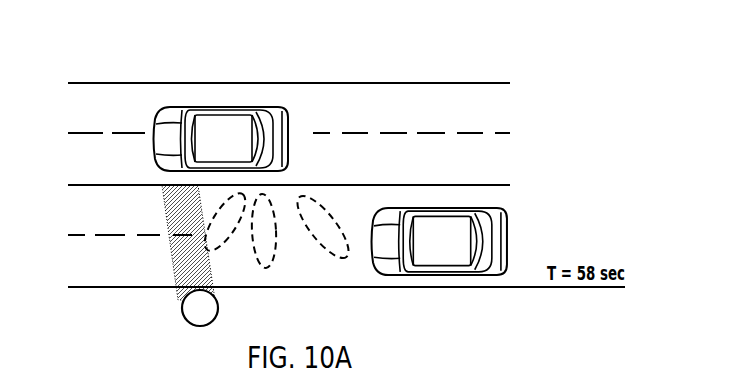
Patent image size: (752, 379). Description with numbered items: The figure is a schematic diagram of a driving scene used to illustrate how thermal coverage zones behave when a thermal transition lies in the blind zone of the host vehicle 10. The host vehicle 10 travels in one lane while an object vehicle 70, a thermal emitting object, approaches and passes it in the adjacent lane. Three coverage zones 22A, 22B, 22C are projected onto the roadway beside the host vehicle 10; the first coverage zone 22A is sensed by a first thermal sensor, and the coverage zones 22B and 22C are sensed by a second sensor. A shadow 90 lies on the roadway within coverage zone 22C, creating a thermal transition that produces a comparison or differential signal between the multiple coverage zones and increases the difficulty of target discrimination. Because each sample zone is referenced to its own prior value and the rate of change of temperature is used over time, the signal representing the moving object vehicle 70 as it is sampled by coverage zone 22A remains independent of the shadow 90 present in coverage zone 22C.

The host vehicle 10 is at (167, 112).
The object vehicle 70 is at (503, 212).
The shadow 90 is at (165, 208).
The first coverage zone 22A is at (336, 216).
The coverage zone 22B is at (278, 231).
The coverage zone 22C is at (222, 236).